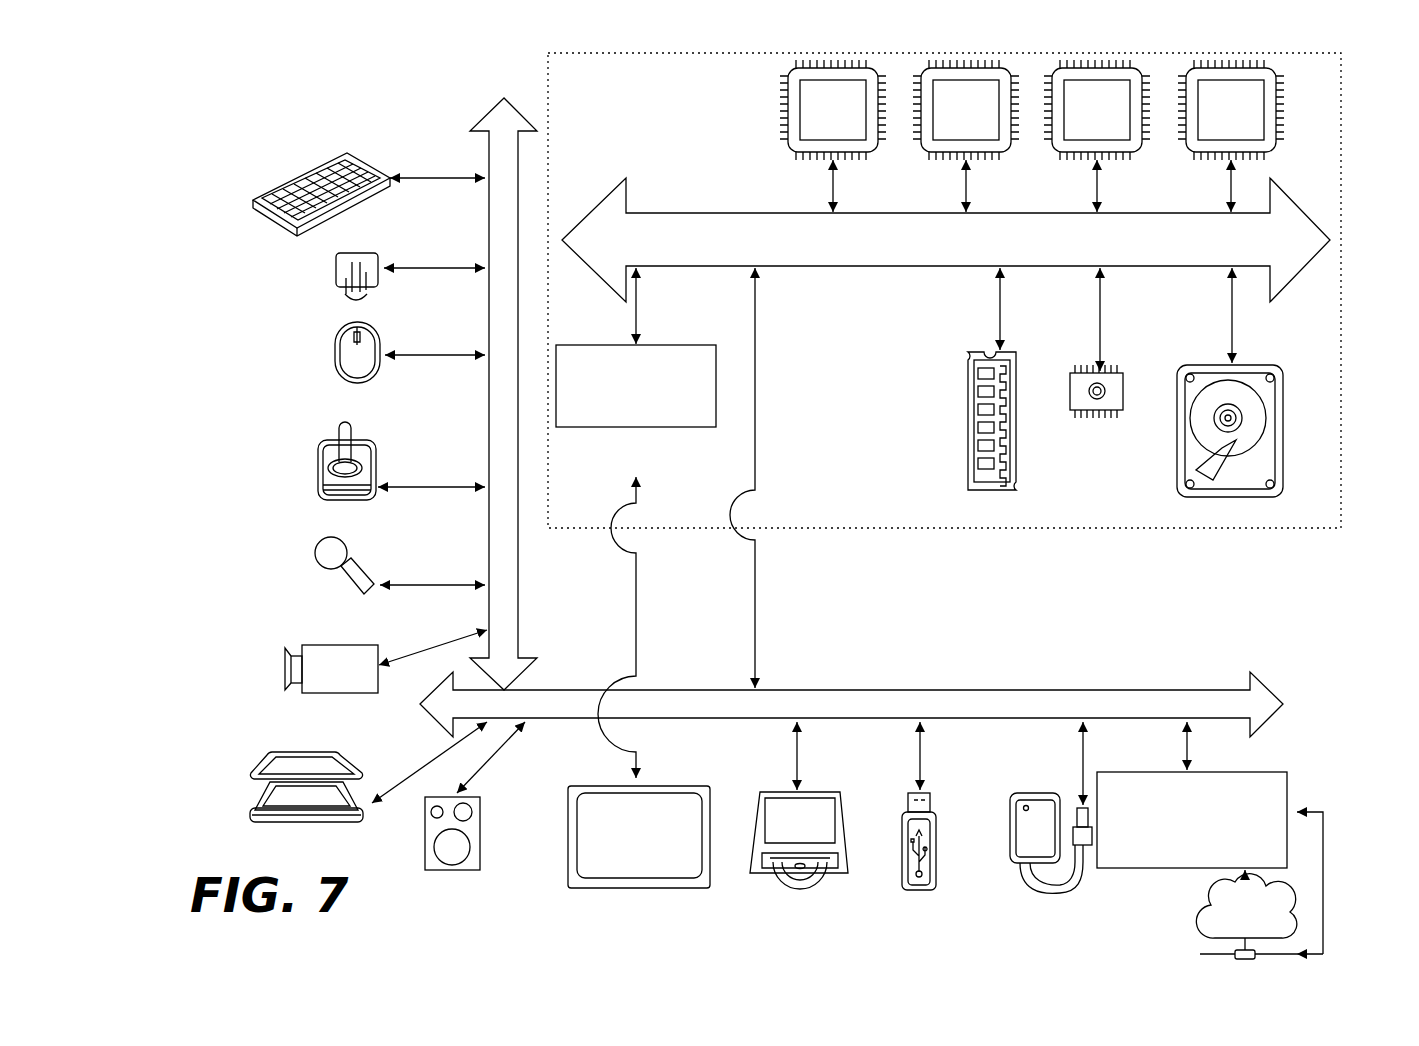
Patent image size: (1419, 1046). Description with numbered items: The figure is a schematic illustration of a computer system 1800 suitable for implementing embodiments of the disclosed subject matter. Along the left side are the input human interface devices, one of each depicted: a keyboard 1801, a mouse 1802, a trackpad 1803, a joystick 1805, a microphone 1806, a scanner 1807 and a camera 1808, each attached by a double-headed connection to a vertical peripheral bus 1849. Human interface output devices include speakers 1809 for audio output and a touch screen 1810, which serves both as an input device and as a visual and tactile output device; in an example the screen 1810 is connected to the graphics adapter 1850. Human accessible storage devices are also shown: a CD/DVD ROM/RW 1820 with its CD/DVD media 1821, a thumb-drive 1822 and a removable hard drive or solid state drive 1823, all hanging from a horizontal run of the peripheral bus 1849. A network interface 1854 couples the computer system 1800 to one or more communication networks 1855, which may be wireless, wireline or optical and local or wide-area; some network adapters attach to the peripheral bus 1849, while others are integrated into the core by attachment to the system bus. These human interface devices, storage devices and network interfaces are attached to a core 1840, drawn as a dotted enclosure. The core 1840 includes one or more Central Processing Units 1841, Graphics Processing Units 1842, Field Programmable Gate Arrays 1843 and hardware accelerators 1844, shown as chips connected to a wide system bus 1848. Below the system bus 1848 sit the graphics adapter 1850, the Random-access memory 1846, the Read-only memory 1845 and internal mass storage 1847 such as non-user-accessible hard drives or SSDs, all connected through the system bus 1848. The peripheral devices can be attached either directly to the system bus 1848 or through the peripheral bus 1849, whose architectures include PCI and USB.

The computer system 1800 is at (267, 117).
The keyboard 1801 is at (258, 208).
The mouse 1802 is at (336, 357).
The trackpad 1803 is at (336, 277).
The joystick 1805 is at (318, 485).
The microphone 1806 is at (316, 557).
The scanner 1807 is at (255, 810).
The camera 1808 is at (287, 670).
The speakers 1809 is at (450, 870).
The touch screen 1810 is at (637, 889).
The CD/DVD ROM/RW 1820 is at (838, 875).
The CD/DVD media 1821 is at (780, 885).
The thumb-drive 1822 is at (920, 893).
The removable hard drive or solid state drive 1823 is at (1020, 863).
The core 1840 is at (940, 527).
The Central Processing Unit 1841 is at (833, 136).
The Graphics Processing Unit 1842 is at (966, 136).
The Field Programmable Gate Array 1843 is at (1097, 136).
The hardware accelerator 1844 is at (1231, 136).
The Read-only memory 1845 is at (1087, 418).
The Random-access memory 1846 is at (968, 450).
The internal mass storage 1847 is at (1195, 362).
The system bus 1848 is at (946, 240).
The peripheral bus 1849 is at (487, 145).
The graphics adapter 1850 is at (636, 523).
The network interface 1854 is at (1210, 838).
The communication network 1855 is at (1200, 928).